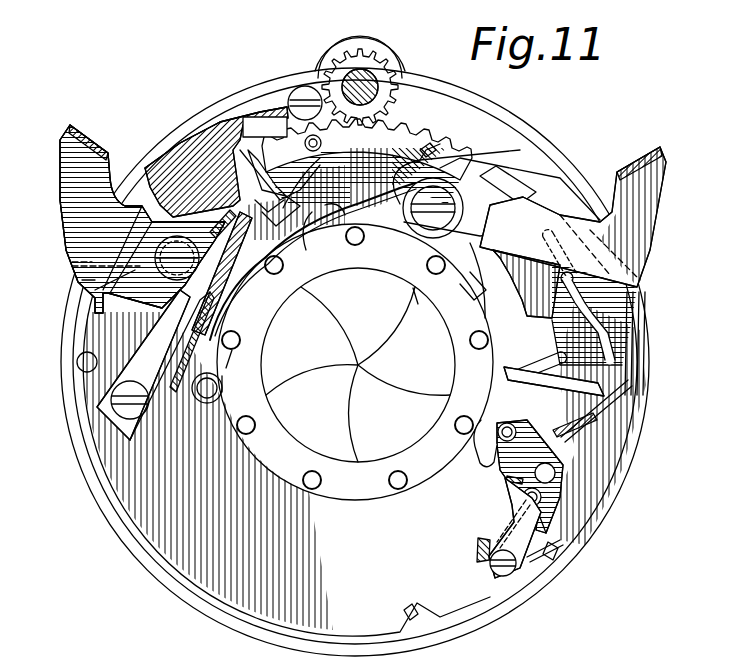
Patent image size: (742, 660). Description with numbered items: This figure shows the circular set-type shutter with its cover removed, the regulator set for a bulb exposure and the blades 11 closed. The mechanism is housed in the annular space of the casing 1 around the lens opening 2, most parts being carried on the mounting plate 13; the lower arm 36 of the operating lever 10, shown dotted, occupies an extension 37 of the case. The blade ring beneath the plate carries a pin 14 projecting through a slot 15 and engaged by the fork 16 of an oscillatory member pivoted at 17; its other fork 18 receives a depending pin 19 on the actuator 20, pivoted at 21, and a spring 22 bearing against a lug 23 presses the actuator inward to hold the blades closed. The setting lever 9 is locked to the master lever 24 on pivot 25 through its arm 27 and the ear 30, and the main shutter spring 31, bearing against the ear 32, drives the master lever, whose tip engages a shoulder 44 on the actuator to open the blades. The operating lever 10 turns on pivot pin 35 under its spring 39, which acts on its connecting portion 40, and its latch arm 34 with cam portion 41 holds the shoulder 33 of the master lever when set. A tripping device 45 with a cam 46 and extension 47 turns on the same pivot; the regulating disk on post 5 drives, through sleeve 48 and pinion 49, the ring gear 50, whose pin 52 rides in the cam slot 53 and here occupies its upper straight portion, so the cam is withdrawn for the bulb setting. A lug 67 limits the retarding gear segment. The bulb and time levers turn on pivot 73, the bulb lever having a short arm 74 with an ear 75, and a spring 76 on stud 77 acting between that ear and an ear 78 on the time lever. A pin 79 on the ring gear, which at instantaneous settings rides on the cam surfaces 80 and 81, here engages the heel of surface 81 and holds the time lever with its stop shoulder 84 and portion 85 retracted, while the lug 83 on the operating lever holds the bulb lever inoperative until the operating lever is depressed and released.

The casing 1 is at (102, 498).
The lens opening 2 is at (422, 308).
The post 5 is at (358, 56).
The setting lever 9 is at (650, 190).
The operating lever 10 is at (62, 152).
The blades 11 is at (340, 318).
The mounting plate 13 is at (250, 452).
The pin 14 is at (500, 426).
The slot 15 is at (476, 454).
The fork 16 is at (528, 386).
The pivot 17 is at (556, 464).
The fork 18 is at (556, 510).
The depending pin 19 is at (522, 496).
The actuator 20 is at (504, 524).
The pivot 21 is at (490, 568).
The spring 22 is at (545, 556).
The lug 23 is at (558, 550).
The master lever 24 is at (524, 290).
The pivot 25 is at (424, 222).
The arm 27 is at (530, 180).
The ear 30 is at (498, 180).
The main shutter spring 31 is at (466, 170).
The ear 32 is at (476, 296).
The shoulder 33 is at (284, 196).
The latch arm 34 is at (210, 128).
The pivot pin 35 is at (118, 272).
The lower arm 36 is at (68, 250).
The extension 37 is at (74, 280).
The spring 39 is at (180, 152).
The connecting portion 40 is at (228, 356).
The cam portion 41 is at (258, 198).
The shoulder 44 is at (504, 478).
The tripping device 45 is at (648, 336).
The cam 46 is at (632, 384).
The extension 47 is at (530, 366).
The sleeve 48 is at (372, 84).
The pinion 49 is at (372, 60).
The ring gear 50 is at (418, 140).
The pin 52 is at (574, 280).
The slot 53 is at (616, 322).
The lug 67 is at (406, 608).
The pivot 73 is at (106, 424).
The short arm 74 is at (100, 360).
The ear 75 is at (148, 404).
The spring 76 is at (204, 404).
The stud 77 is at (226, 384).
The ear 78 is at (182, 248).
The pin 79 is at (312, 134).
The cam surface 80 is at (432, 150).
The cam surface 81 is at (306, 86).
The lug 83 is at (222, 228).
The stop shoulder 84 is at (310, 232).
The portion 85 is at (226, 318).